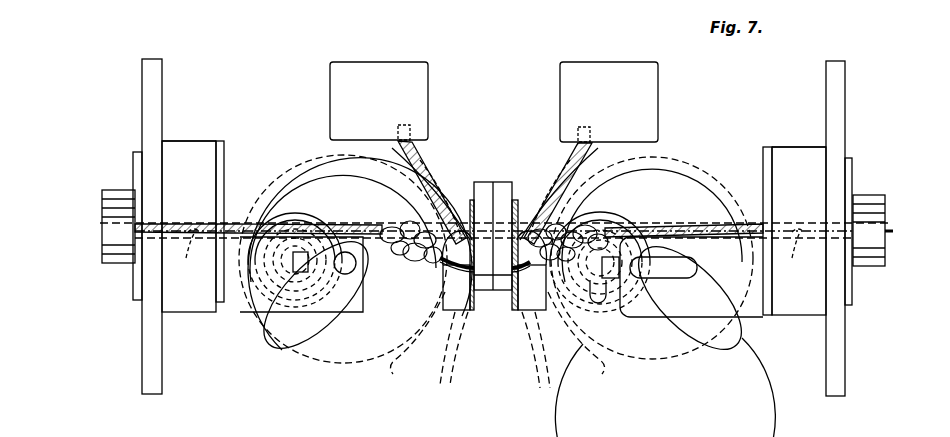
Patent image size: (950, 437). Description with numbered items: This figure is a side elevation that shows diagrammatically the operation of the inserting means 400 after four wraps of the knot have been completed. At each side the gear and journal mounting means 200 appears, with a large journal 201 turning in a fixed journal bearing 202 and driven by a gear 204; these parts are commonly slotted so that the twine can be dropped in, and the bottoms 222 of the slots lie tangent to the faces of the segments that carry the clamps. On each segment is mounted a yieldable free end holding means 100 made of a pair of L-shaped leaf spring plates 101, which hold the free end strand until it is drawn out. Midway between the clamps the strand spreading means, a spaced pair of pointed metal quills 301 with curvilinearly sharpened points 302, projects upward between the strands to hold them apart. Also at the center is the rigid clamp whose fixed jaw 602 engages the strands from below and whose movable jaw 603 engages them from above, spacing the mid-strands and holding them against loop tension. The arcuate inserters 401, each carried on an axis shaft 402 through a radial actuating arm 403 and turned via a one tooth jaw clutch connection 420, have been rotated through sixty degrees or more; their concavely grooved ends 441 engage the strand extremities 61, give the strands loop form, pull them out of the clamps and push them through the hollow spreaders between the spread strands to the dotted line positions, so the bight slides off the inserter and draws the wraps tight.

The free end strand extremities 61 is at (455, 195).
The free end holding means 100 is at (330, 95).
The leaf spring plates 101 is at (388, 75).
The gear and journal mounting means 200 is at (493, 227).
The journals 201 is at (224, 141).
The journal bearings 202 is at (195, 141).
The driving gear 204 is at (112, 190).
The slot bottoms 222 is at (495, 251).
The pointed metal quills 301 is at (520, 305).
The sharpened points 302 is at (455, 192).
The inserting means 400 is at (511, 297).
The arcuate inserters 401 is at (309, 160).
The axis shaft 402 is at (357, 268).
The radial actuating arm 403 is at (305, 340).
The one tooth jaw clutch connections 420 is at (285, 300).
The concave grooves 441 is at (440, 200).
The fixed jaw 602 is at (492, 290).
The movable jaw 603 is at (493, 182).